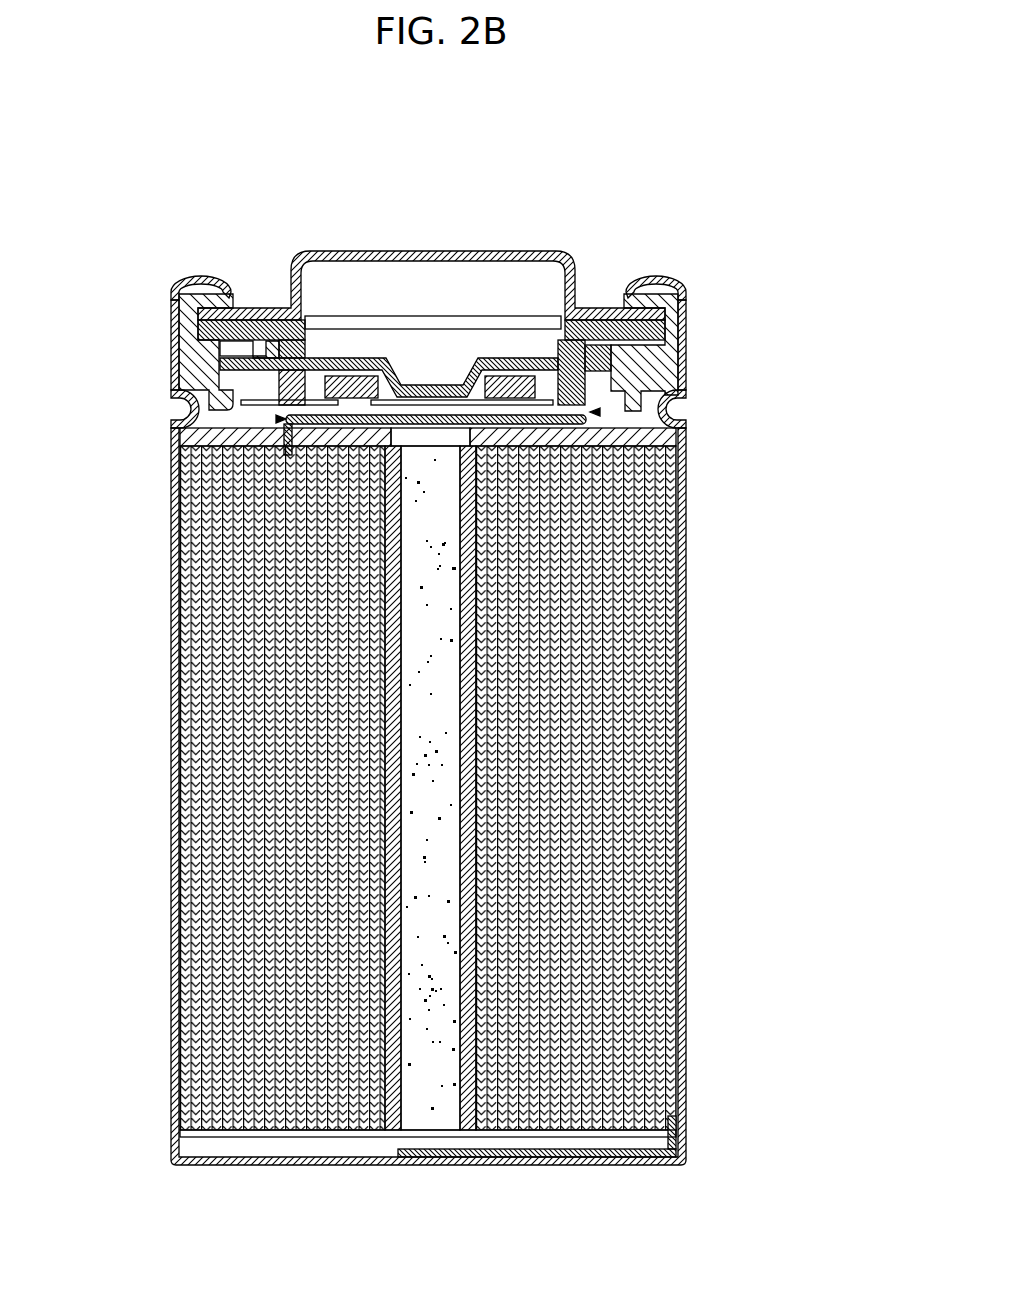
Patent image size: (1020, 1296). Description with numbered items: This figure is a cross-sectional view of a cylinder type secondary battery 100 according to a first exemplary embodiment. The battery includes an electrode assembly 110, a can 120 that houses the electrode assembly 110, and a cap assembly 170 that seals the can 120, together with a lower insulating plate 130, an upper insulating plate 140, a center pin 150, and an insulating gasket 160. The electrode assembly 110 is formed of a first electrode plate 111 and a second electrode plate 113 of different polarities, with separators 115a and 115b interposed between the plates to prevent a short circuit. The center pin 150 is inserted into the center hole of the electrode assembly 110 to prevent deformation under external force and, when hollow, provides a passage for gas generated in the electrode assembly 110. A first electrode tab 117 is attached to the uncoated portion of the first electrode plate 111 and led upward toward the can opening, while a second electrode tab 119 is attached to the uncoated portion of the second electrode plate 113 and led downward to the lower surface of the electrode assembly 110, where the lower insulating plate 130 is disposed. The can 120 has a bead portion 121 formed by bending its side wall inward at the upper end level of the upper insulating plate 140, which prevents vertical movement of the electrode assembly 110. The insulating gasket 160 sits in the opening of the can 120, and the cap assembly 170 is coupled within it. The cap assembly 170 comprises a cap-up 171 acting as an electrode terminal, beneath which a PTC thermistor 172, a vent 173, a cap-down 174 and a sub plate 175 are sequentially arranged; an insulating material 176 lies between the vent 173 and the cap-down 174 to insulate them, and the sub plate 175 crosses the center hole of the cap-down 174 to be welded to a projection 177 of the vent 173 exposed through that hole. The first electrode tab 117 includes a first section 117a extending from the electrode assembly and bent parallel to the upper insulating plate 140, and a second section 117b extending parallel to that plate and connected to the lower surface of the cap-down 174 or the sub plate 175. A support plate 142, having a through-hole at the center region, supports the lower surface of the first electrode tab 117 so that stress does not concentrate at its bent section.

The cylinder type secondary battery 100 is at (127, 146).
The electrode assembly 110 is at (768, 400).
The first electrode plate 111 is at (650, 575).
The second electrode plate 113 is at (655, 477).
The separator 115a is at (650, 545).
The separator 115b is at (638, 612).
The first electrode tab 117 is at (640, 410).
The first section 117a is at (268, 410).
The second section 117b is at (592, 404).
The second electrode tab 119 is at (595, 1158).
The can 120 is at (165, 537).
The bead portion 121 is at (170, 392).
The lower insulating plate 130 is at (298, 1130).
The upper insulating plate 140 is at (240, 428).
The support plate 142 is at (278, 449).
The center pin 150 is at (400, 597).
The insulating gasket 160 is at (660, 318).
The cap assembly 170 is at (585, 178).
The cap-up 171 is at (492, 243).
The PTC thermistor 172 is at (590, 313).
The vent 173 is at (262, 340).
The cap-down 174 is at (300, 350).
The sub plate 175 is at (480, 330).
The insulating material 176 is at (240, 322).
The projection 177 is at (426, 386).